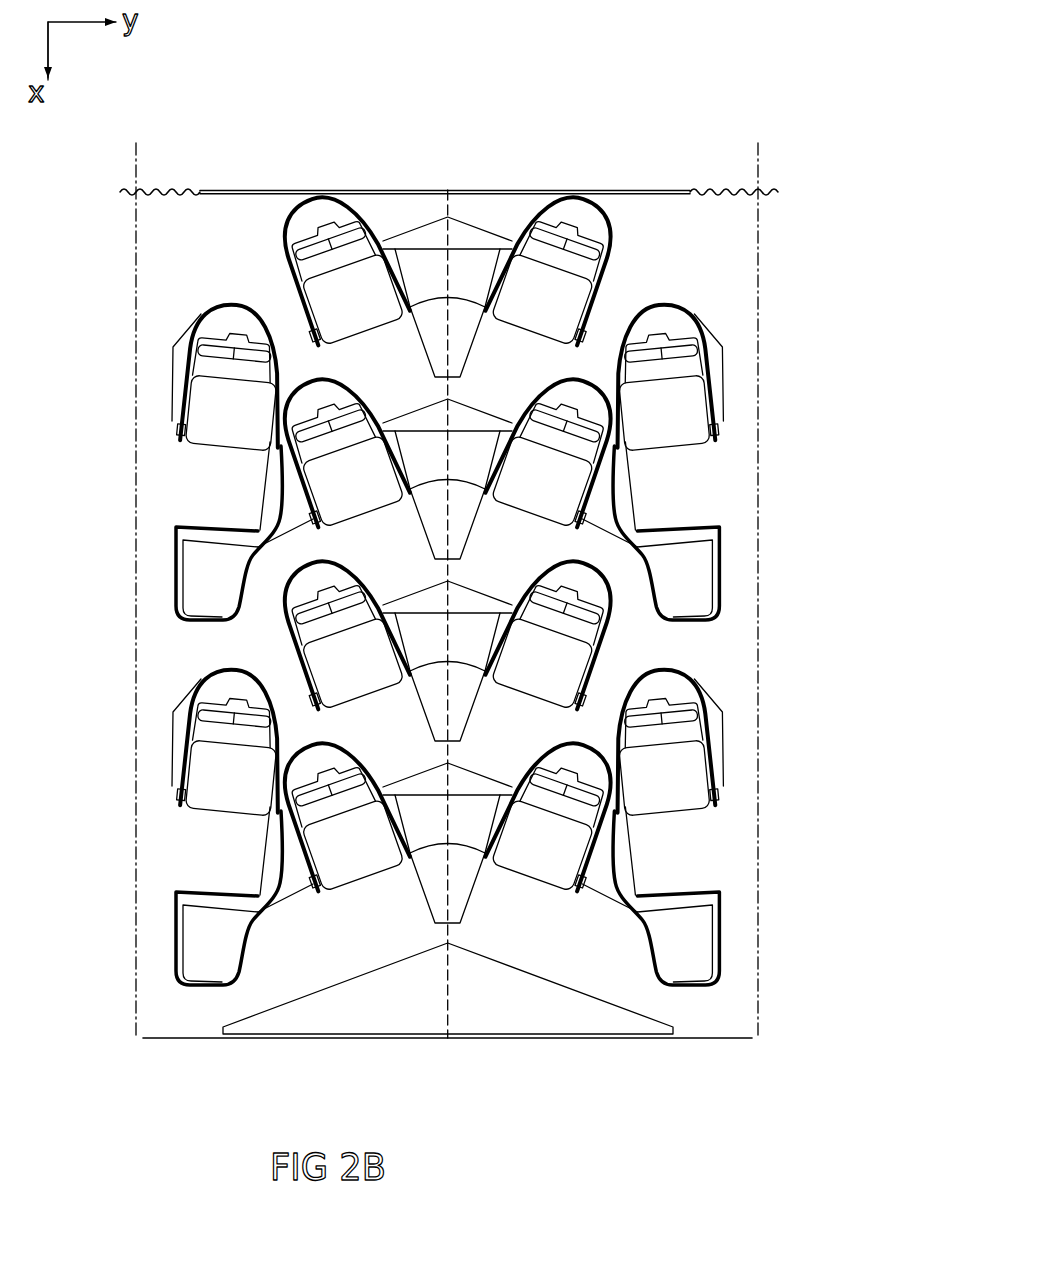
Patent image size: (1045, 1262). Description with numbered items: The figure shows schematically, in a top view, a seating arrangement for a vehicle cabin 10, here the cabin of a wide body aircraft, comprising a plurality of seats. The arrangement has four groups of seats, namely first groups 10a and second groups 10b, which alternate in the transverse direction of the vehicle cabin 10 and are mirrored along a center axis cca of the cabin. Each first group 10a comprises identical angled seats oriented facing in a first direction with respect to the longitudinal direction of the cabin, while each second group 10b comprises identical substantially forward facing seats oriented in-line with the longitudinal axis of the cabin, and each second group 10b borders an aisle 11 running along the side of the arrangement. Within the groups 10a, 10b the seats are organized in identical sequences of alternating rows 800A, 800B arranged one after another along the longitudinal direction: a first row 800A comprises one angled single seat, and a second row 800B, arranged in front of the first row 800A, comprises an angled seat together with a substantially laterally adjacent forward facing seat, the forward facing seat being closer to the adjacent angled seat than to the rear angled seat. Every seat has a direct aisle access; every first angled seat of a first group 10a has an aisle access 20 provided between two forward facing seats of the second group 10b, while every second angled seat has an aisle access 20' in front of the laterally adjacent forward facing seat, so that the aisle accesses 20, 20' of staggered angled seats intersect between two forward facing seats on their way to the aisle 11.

The vehicle cabin 10 is at (583, 158).
The first group 10a is at (330, 158).
The second group 10b is at (207, 158).
The center axis cca is at (448, 188).
The direct aisle access 20 is at (648, 443).
The direct aisle access 20' is at (614, 629).
The first row 800A is at (794, 268).
The second row 800B is at (794, 388).
The aisle 11 is at (108, 733).